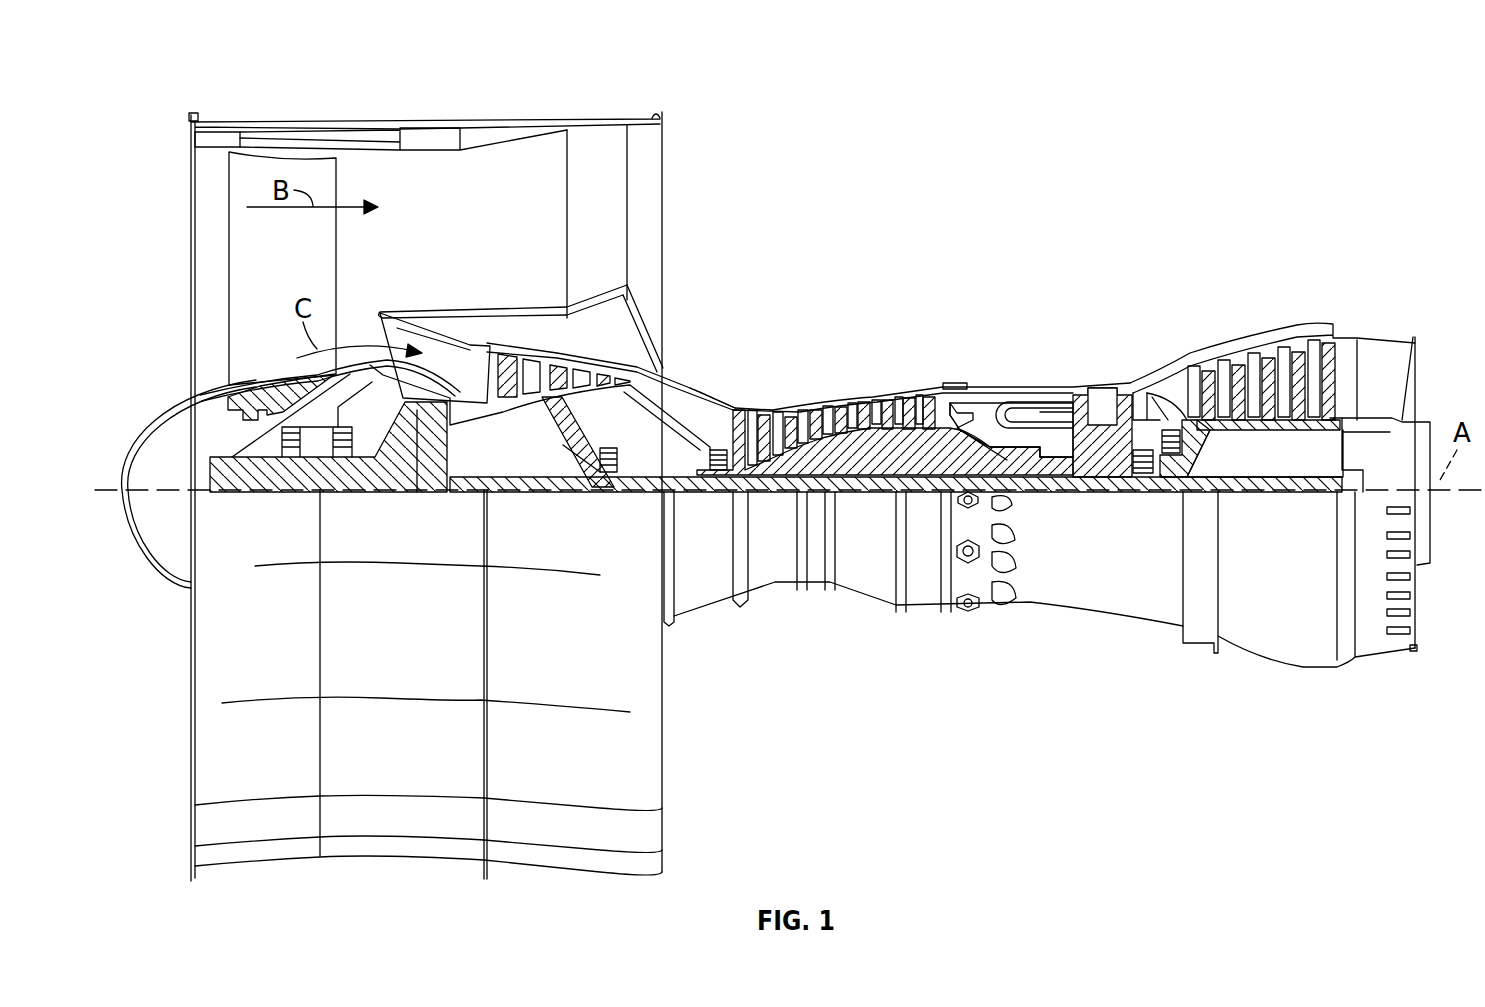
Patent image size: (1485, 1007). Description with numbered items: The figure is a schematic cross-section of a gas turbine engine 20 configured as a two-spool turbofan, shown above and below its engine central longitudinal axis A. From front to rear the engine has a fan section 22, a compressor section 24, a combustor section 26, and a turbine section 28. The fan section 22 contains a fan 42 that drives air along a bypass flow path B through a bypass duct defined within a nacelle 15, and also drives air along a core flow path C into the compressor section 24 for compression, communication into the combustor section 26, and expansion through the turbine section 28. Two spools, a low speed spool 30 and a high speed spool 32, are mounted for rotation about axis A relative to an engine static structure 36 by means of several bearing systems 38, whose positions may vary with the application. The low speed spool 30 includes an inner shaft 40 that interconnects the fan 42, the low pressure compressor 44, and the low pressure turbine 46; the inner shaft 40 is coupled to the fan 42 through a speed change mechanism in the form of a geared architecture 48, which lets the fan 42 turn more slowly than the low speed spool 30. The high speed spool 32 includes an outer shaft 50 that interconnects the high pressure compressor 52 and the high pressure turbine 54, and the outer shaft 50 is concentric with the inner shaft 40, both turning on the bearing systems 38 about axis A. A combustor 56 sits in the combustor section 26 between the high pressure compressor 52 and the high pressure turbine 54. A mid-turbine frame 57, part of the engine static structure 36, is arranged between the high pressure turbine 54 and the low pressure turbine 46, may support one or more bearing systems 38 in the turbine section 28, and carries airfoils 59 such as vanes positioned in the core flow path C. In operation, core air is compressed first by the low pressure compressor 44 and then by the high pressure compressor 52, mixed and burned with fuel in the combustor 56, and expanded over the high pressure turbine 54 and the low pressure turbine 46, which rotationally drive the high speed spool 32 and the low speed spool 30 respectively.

The nacelle 15 is at (430, 132).
The gas turbine engine 20 is at (1236, 155).
The fan section 22 is at (350, 112).
The compressor section 24 is at (737, 382).
The combustor section 26 is at (1020, 352).
The turbine section 28 is at (1172, 326).
The low speed spool 30 is at (883, 498).
The high speed spool 32 is at (938, 450).
The engine static structure 36 is at (924, 618).
The bearing systems 38 is at (607, 480).
The inner shaft 40 is at (678, 494).
The fan 42 is at (307, 269).
The low pressure compressor 44 is at (557, 372).
The low pressure turbine 46 is at (1268, 350).
The geared architecture 48 is at (430, 460).
The outer shaft 50 is at (1050, 468).
The high pressure compressor 52 is at (843, 460).
The high pressure turbine 54 is at (1106, 388).
The combustor 56 is at (1028, 412).
The mid-turbine frame 57 is at (1166, 378).
The airfoils 59 is at (1150, 407).